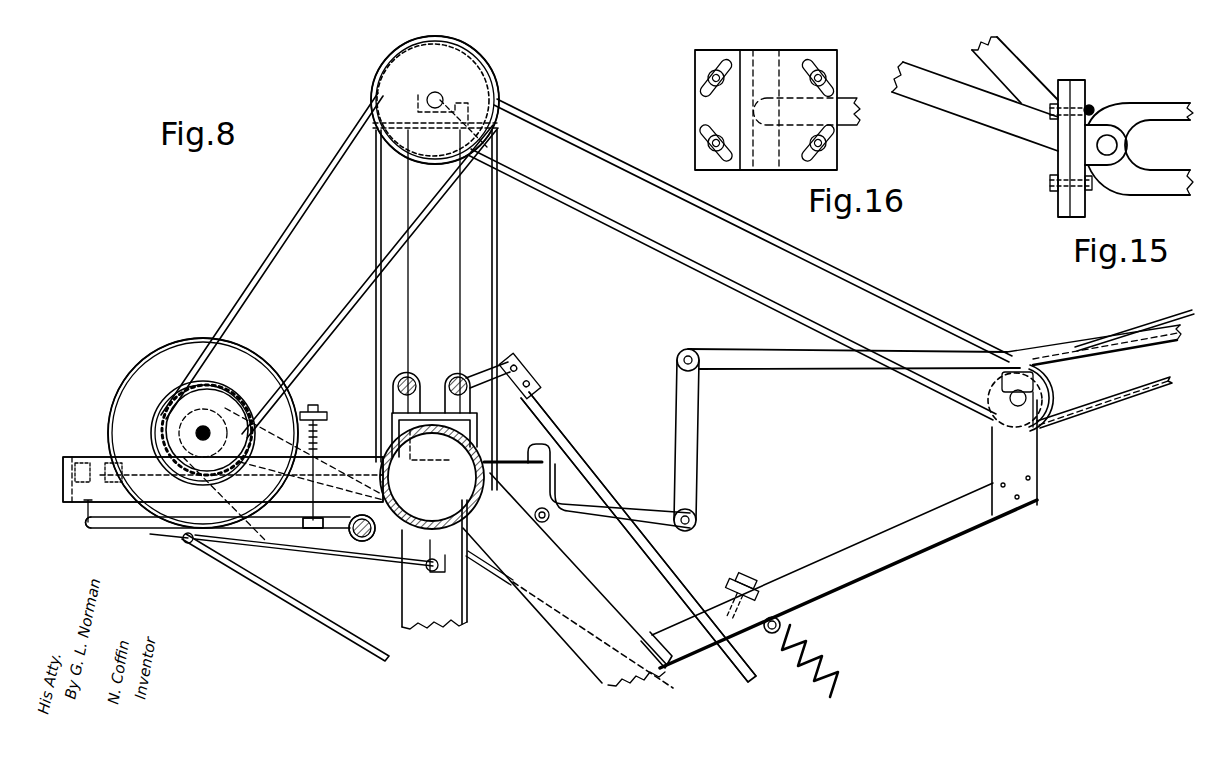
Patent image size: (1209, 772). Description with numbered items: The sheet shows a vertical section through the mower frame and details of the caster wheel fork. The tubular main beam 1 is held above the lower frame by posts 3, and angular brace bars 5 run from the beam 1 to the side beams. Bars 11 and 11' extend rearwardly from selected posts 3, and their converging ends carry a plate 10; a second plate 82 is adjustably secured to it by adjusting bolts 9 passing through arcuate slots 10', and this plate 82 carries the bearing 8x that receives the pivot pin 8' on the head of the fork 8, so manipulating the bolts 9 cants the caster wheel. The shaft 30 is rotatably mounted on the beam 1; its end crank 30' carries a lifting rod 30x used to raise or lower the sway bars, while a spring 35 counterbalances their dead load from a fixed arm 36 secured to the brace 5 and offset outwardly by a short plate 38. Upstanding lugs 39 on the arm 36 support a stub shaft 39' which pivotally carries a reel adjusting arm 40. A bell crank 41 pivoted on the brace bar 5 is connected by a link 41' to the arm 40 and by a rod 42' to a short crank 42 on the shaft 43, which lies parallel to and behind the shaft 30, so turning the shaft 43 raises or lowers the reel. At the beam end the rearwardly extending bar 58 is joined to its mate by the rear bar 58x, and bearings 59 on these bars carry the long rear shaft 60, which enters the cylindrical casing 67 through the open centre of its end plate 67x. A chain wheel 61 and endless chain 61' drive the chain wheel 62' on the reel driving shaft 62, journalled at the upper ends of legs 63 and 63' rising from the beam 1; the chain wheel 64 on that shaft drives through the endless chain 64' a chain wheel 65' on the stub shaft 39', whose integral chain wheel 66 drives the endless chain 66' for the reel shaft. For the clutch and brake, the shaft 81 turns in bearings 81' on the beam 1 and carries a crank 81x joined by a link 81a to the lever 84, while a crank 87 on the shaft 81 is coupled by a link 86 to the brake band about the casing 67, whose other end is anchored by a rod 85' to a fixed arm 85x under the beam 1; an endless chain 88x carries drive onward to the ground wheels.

In FIG. 8, the main elevated beam 1 is at (478, 508).
In FIG. 8, the posts 3 is at (410, 608).
In FIG. 8, the angular brace bars 5 is at (575, 586).
In FIG. 15, the fork 8 is at (1140, 149).
In FIG. 15, the pivot pin 8' is at (1127, 142).
In FIG. 15, the bearing 8x is at (1097, 128).
In FIG. 16, the plate 82 is at (838, 61).
In FIG. 15, the plate 82 is at (1082, 83).
In FIG. 16, the adjusting bolts 9 is at (708, 78).
In FIG. 15, the adjusting bolts 9 is at (1050, 183).
In FIG. 15, the second plate 10 is at (1065, 135).
In FIG. 16, the arcuate receiving slots 10' is at (783, 61).
In FIG. 15, the bar 11 is at (975, 106).
In FIG. 15, the bar 11' is at (1015, 69).
In FIG. 8, the shaft 30 is at (483, 362).
In FIG. 8, the clevis 30' is at (512, 355).
In FIG. 8, the lifting rod 30x is at (680, 586).
In FIG. 8, the springs 35 is at (820, 662).
In FIG. 8, the fixed arm 36 is at (850, 553).
In FIG. 8, the short plates 38 is at (643, 636).
In FIG. 8, the upstanding lugs 39 is at (1032, 457).
In FIG. 8, the stub shaft 39' is at (989, 418).
In FIG. 8, the reel adjusting arms 40 is at (906, 362).
In FIG. 8, the bell crank 41 is at (609, 486).
In FIG. 8, the link 41' is at (706, 440).
In FIG. 8, the short crank 42 is at (405, 411).
In FIG. 8, the rod 42' is at (638, 533).
In FIG. 8, the shaft 43 is at (420, 372).
In FIG. 8, the inner bar 58 is at (290, 496).
In FIG. 8, the rear bar 58x is at (75, 456).
In FIG. 8, the inner bearings 59 is at (216, 402).
In FIG. 8, the rear shaft 60 is at (212, 428).
In FIG. 8, the chain wheel 61 is at (196, 428).
In FIG. 8, the endless chain 61' is at (329, 265).
In FIG. 8, the reel driving shaft 62 is at (446, 100).
In FIG. 8, the chain wheel 62' is at (423, 99).
In FIG. 8, the upstanding leg 63 is at (466, 271).
In FIG. 8, the upstanding leg 63' is at (459, 310).
In FIG. 8, the chain wheel 64 is at (407, 100).
In FIG. 8, the endless chain 64' is at (740, 259).
In FIG. 8, the chain wheel 65' is at (1063, 398).
In FIG. 8, the second chain wheel 66 is at (995, 400).
In FIG. 8, the endless chain 66' is at (1100, 358).
In FIG. 8, the casing 67 is at (243, 337).
In FIG. 8, the end plate 67x is at (173, 354).
In FIG. 8, the shaft 81 is at (260, 547).
In FIG. 8, the bearings 81' is at (369, 555).
In FIG. 8, the link 81a is at (86, 526).
In FIG. 8, the crank 81x is at (88, 506).
In FIG. 8, the lever 84 is at (188, 543).
In FIG. 8, the rod 85' is at (293, 551).
In FIG. 8, the fixed arm 85x is at (445, 573).
In FIG. 8, the link 86 is at (316, 445).
In FIG. 8, the crank 87 is at (330, 520).
In FIG. 8, the endless chains 88x is at (330, 606).